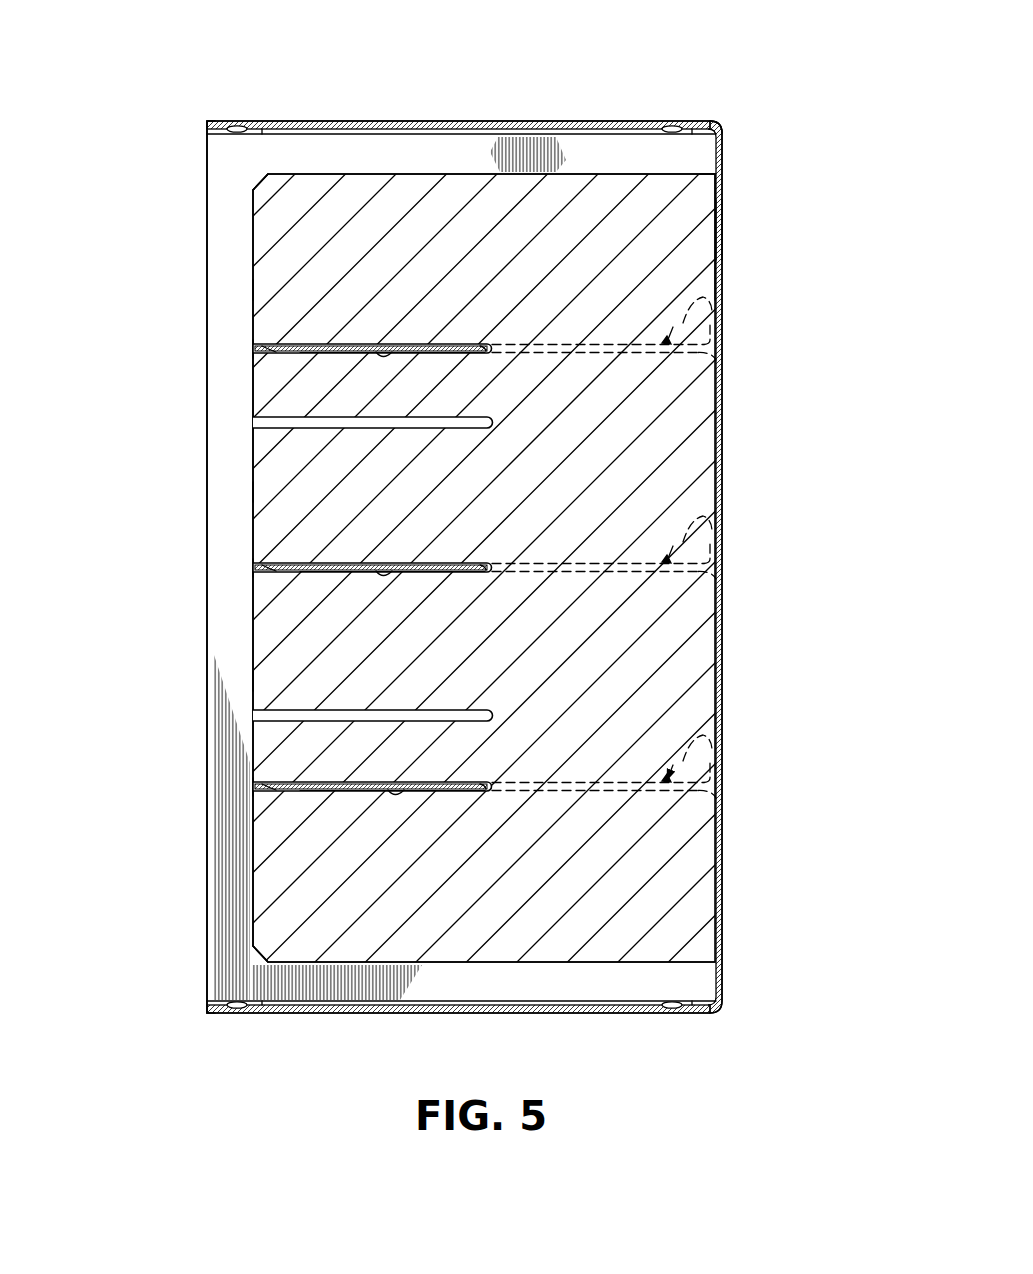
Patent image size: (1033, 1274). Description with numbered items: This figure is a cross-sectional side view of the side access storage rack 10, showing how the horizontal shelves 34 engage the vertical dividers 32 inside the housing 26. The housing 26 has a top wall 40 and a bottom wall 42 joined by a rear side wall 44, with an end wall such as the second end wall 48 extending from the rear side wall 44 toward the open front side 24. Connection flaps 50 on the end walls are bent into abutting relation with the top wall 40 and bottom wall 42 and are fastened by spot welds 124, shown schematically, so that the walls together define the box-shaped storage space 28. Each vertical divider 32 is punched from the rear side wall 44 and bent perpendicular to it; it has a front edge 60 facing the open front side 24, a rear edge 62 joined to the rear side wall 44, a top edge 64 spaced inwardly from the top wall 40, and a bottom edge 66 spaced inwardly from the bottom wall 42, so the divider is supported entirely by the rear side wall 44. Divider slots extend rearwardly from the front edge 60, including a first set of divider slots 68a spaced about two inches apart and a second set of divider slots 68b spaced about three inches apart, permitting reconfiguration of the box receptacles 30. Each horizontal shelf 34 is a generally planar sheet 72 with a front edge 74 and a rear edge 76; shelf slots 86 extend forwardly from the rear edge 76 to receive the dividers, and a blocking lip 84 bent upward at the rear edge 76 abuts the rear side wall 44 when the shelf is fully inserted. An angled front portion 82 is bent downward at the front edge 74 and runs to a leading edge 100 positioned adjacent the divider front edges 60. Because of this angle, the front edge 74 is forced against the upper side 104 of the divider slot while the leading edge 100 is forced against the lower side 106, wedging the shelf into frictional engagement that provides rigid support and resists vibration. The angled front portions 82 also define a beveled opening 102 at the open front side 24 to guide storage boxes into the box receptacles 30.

The side access storage rack 10 is at (209, 63).
The open front side 24 is at (206, 945).
The housing 26 is at (727, 130).
The box-shaped storage space 28 is at (226, 642).
The box receptacle 30 is at (516, 568).
The vertical divider 32 is at (698, 185).
The horizontal shelf 34 is at (716, 290).
The top wall 40 is at (409, 120).
The bottom wall 42 is at (594, 1014).
The rear side wall 44 is at (724, 406).
The second end wall 48 is at (444, 155).
The connection flap 50 is at (560, 120).
The front edge 60 is at (256, 460).
The rear edge 62 is at (724, 226).
The top edge 64 is at (625, 173).
The bottom edge 66 is at (490, 964).
The first set of divider slots 68a is at (256, 362).
The second set of divider slots 68b is at (256, 422).
The generally planar sheet 72 is at (590, 343).
The front edge 74 is at (278, 358).
The rear edge 76 is at (723, 354).
The angled front portion 82 is at (256, 343).
The blocking lip 84 is at (714, 304).
The shelf slot 86 is at (487, 343).
The leading edge 100 is at (256, 350).
The beveled opening 102 is at (262, 289).
The upper side of the divider slot 104 is at (385, 347).
The lower side of the divider slot 106 is at (445, 356).
The spot weld 124 is at (237, 126).